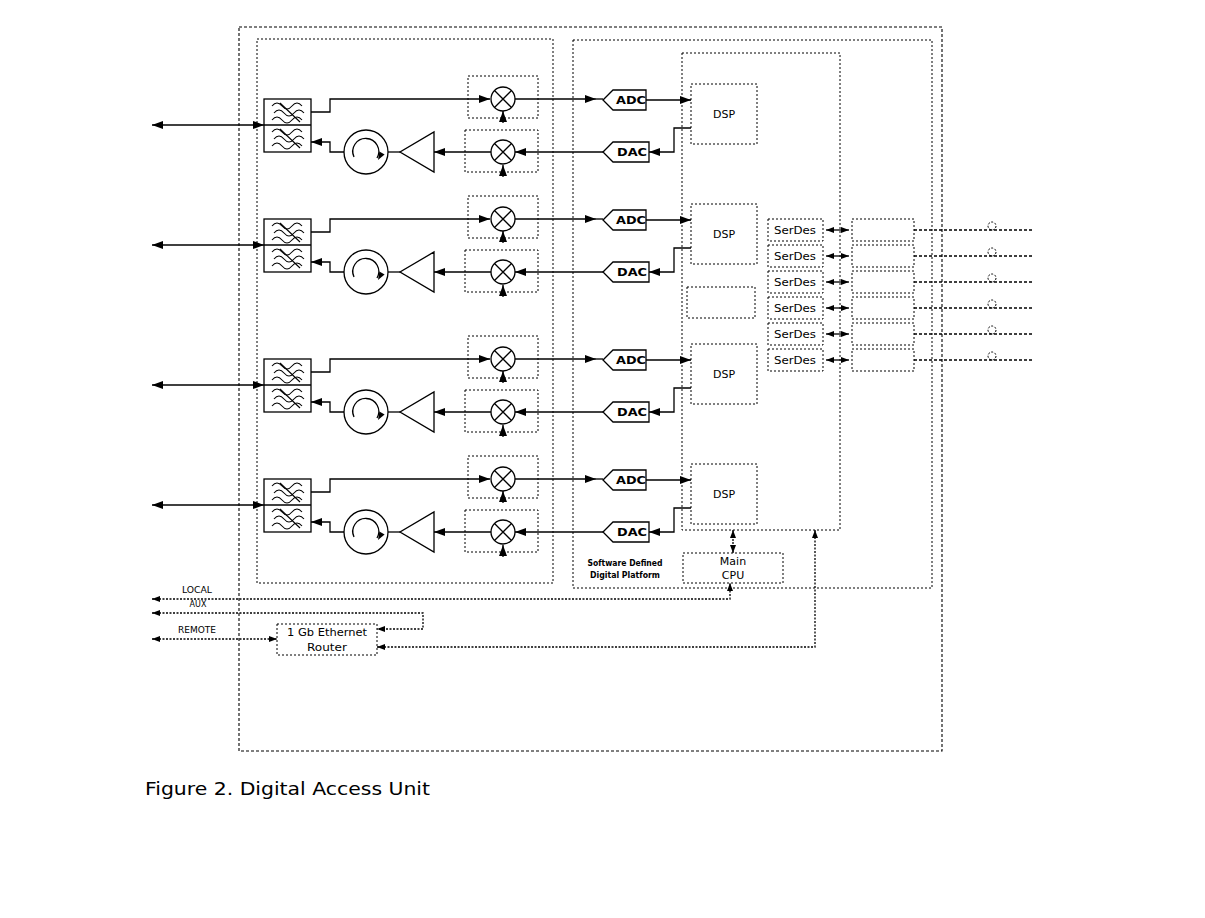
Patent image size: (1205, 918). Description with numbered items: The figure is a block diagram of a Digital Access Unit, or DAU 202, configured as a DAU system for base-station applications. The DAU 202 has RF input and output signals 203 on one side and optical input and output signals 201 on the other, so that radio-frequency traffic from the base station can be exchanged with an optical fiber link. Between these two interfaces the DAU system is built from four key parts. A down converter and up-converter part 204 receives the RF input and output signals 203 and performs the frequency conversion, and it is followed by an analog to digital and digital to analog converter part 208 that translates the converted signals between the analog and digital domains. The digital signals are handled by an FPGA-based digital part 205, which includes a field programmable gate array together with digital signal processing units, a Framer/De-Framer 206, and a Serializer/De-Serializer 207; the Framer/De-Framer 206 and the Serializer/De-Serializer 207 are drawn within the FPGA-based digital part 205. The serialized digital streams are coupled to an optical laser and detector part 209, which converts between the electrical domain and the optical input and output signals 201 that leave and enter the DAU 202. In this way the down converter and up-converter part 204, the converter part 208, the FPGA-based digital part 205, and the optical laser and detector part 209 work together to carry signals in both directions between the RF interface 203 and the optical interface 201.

The optical input and output signals 201 is at (1032, 278).
The digital access unit (DAU) 202 is at (590, 389).
The RF input and output signals 203 is at (131, 274).
The down converter and up-converter part 204 is at (377, 311).
The FPGA-based digital part 205 is at (761, 291).
The Framer/De-Framer 206 is at (687, 318).
The Serializer/De-Serializer 207 is at (803, 373).
The analog to digital and digital to analog converter part 208 is at (647, 429).
The optical laser and detector part 209 is at (885, 205).